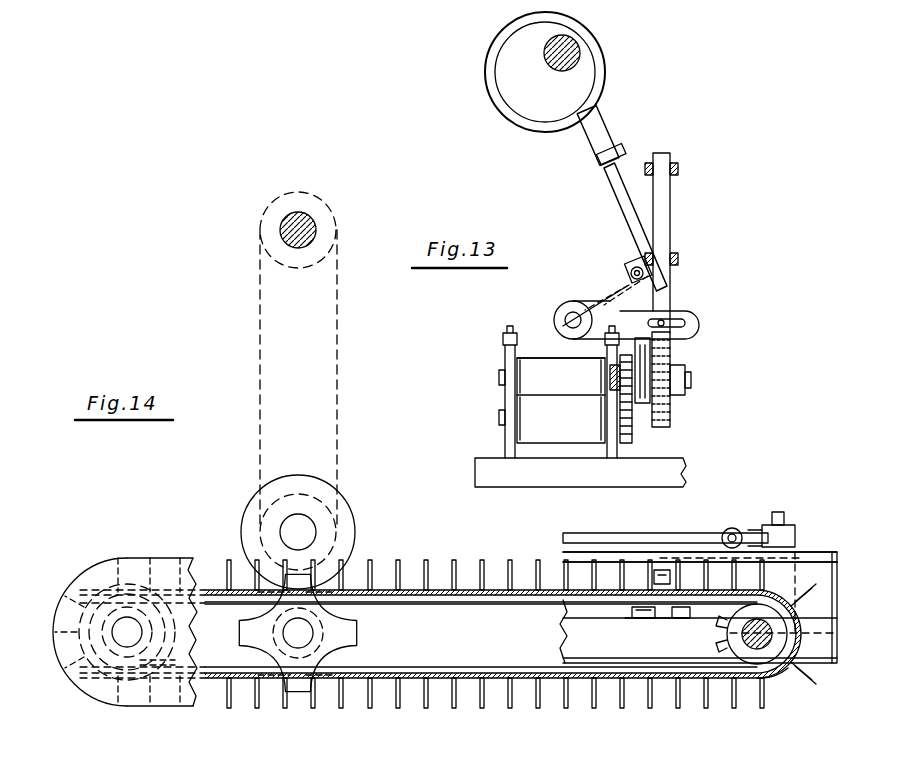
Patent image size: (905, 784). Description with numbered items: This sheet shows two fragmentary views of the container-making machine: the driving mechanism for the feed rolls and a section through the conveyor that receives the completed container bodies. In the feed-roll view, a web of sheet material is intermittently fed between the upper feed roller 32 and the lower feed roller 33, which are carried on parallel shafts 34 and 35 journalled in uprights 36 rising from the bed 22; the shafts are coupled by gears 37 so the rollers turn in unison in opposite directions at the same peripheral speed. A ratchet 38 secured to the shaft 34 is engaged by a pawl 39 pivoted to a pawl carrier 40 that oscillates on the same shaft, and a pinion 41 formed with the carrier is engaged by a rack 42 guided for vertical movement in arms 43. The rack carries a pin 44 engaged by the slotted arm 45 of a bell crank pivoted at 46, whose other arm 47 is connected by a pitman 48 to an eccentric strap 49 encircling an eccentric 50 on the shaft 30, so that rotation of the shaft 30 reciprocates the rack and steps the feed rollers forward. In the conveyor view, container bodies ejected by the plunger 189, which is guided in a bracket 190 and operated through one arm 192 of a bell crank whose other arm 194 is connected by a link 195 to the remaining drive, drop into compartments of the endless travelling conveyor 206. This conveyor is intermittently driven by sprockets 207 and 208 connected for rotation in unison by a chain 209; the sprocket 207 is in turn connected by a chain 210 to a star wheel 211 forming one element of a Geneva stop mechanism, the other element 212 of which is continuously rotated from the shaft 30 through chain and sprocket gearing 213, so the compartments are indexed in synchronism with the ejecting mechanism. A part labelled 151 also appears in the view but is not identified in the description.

In FIG. 13, the bed 22 is at (490, 470).
In FIG. 14, the bed 22 is at (570, 648).
In FIG. 13, the shaft 30 is at (556, 50).
In FIG. 14, the shaft 30 is at (290, 228).
In FIG. 13, the upper feed roller 32 is at (540, 358).
In FIG. 13, the lower feed roller 33 is at (545, 430).
In FIG. 13, the shaft 34 is at (503, 375).
In FIG. 13, the shaft 35 is at (503, 418).
In FIG. 13, the uprights 36 is at (512, 395).
In FIG. 13, the gears 37 is at (630, 398).
In FIG. 13, the ratchet 38 is at (612, 372).
In FIG. 13, the pawl 39 is at (640, 340).
In FIG. 13, the pawl carrier 40 is at (672, 355).
In FIG. 13, the pinion 41 is at (688, 376).
In FIG. 13, the rack 42 is at (663, 210).
In FIG. 13, the arms 43 is at (678, 168).
In FIG. 13, the pin 44 is at (672, 319).
In FIG. 13, the slotted arm 45 is at (696, 322).
In FIG. 13, the pivot 46 is at (568, 316).
In FIG. 13, the arm 47 is at (612, 300).
In FIG. 13, the pitman 48 is at (596, 195).
In FIG. 13, the eccentric strap 49 is at (600, 52).
In FIG. 13, the eccentric 50 is at (525, 105).
In FIG. 14, the top plate 151 is at (560, 555).
In FIG. 14, the plunger 189 is at (648, 618).
In FIG. 14, the bracket 190 is at (670, 618).
In FIG. 14, the arm 192 is at (660, 572).
In FIG. 14, the arm 194 is at (766, 545).
In FIG. 14, the link 195 is at (695, 536).
In FIG. 14, the endless travelling conveyor 206 is at (776, 680).
In FIG. 14, the sprocket 207 is at (150, 665).
In FIG. 14, the sprocket 208 is at (745, 656).
In FIG. 14, the chain 209 is at (527, 678).
In FIG. 14, the chain 210 is at (178, 663).
In FIG. 14, the star wheel 211 is at (345, 645).
In FIG. 14, the Geneva stop element 212 is at (350, 536).
In FIG. 14, the chain and sprocket gearing 213 is at (340, 392).